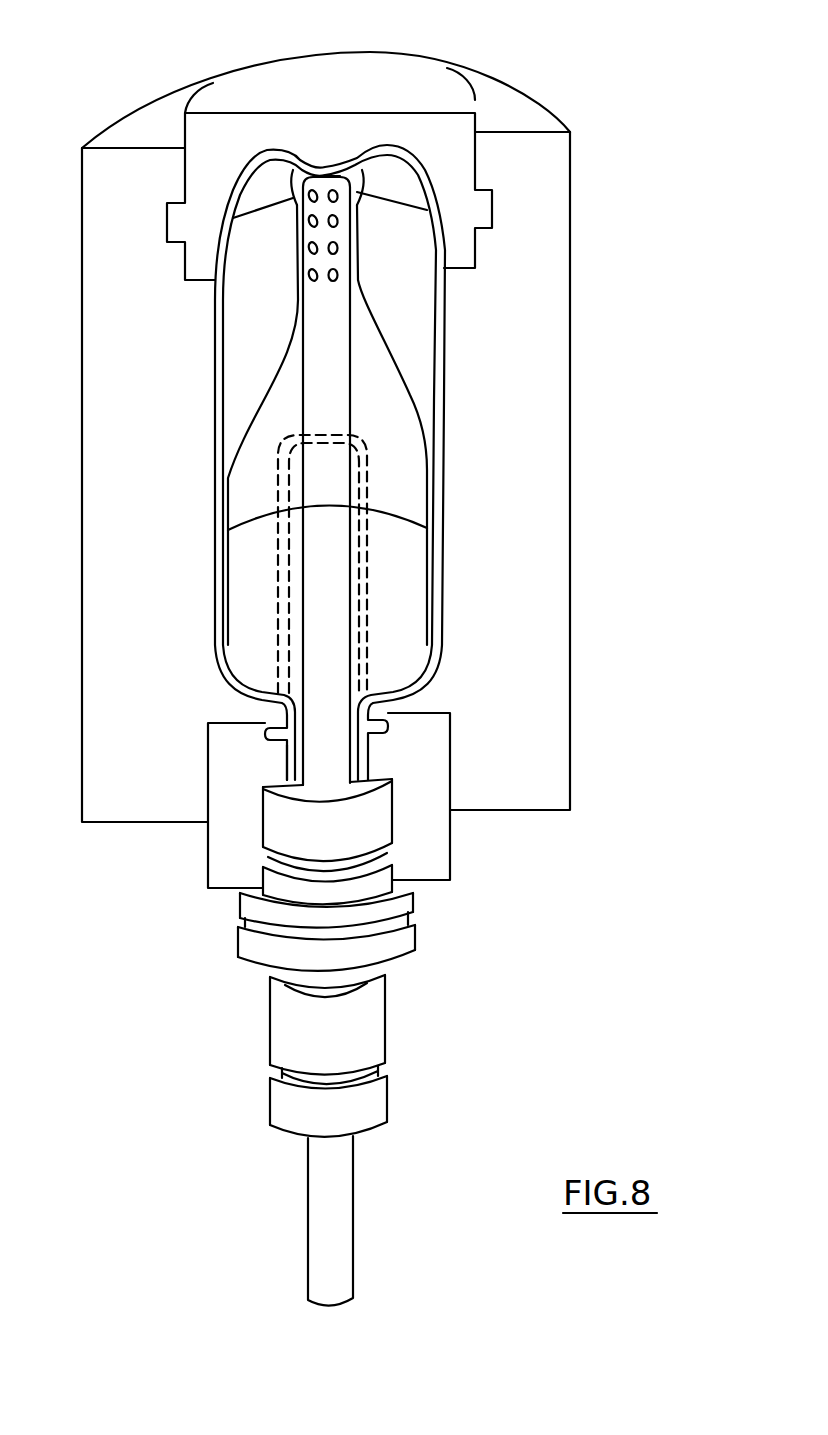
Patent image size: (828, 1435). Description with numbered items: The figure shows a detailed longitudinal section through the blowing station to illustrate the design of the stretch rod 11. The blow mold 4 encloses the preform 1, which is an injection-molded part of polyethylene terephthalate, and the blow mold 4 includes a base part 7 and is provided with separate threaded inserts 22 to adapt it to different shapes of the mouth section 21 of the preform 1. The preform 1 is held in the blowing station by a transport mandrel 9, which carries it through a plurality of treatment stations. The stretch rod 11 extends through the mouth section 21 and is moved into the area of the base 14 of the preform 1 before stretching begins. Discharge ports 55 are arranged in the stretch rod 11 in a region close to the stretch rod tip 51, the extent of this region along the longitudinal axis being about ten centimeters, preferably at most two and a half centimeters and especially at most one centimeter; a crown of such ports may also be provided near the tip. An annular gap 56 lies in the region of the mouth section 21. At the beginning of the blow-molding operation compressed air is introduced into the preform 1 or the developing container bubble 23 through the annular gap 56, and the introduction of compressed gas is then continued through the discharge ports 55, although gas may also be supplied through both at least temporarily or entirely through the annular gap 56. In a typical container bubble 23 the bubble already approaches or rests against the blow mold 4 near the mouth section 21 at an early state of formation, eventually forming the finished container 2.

The preform 1 is at (365, 604).
The container 2 is at (438, 378).
The blow mold 4 is at (528, 445).
The base part 7 is at (413, 70).
The transport mandrel 9 is at (403, 950).
The stretch rod 11 is at (308, 1240).
The base 14 is at (365, 444).
The mouth section 21 is at (370, 747).
The threaded inserts 22 is at (432, 838).
The container bubble 23 is at (380, 337).
The stretch rod tip 51 is at (327, 177).
The discharge ports 55 is at (308, 178).
The annular gap 56 is at (300, 760).